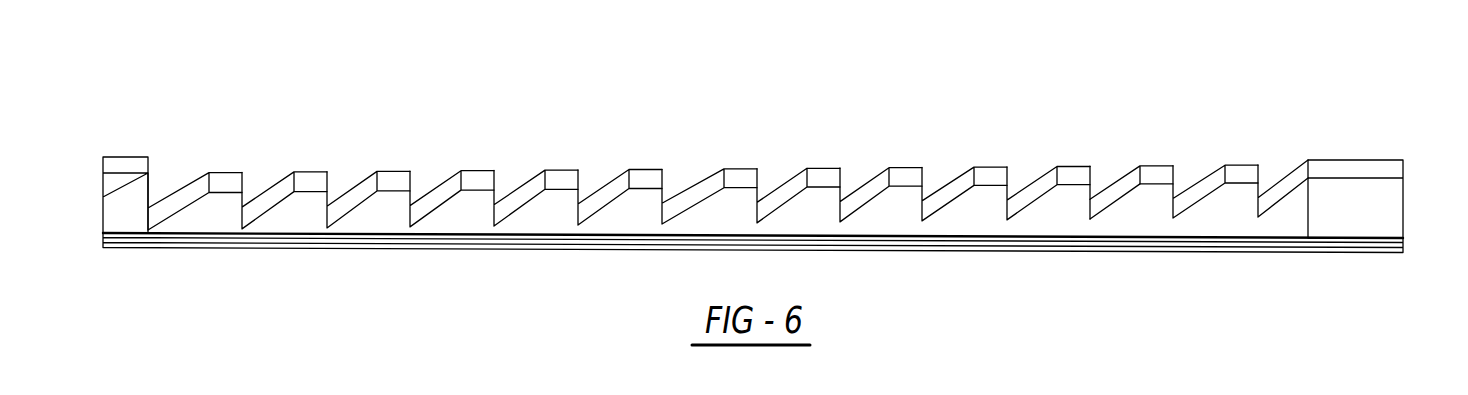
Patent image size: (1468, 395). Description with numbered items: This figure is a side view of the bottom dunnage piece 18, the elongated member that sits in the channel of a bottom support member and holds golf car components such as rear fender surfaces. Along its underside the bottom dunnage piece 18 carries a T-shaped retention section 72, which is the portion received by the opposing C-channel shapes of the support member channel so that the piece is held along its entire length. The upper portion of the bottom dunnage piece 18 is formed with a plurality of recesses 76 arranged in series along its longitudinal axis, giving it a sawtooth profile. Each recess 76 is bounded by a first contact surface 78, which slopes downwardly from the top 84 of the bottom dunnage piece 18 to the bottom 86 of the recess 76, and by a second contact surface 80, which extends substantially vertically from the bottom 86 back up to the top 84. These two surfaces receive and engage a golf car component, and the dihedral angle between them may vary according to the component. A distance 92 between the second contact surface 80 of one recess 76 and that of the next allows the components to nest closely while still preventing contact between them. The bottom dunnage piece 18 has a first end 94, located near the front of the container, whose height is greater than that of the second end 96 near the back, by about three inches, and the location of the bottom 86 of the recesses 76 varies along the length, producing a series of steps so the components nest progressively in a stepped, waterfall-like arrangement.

The bottom dunnage piece 18 is at (738, 109).
The T-shaped retention section 72 is at (178, 243).
The recess 76 is at (1028, 181).
The first contact surface 78 is at (1118, 189).
The second contact surface 80 is at (1103, 190).
The top 84 is at (907, 182).
The bottom 86 is at (1090, 219).
The distance 92 is at (413, 213).
The first end 94 is at (1401, 196).
The second end 96 is at (124, 181).